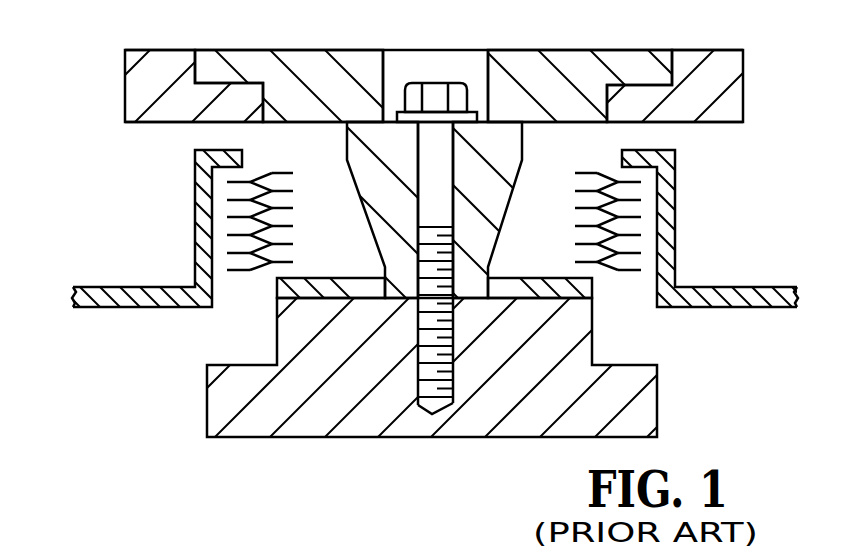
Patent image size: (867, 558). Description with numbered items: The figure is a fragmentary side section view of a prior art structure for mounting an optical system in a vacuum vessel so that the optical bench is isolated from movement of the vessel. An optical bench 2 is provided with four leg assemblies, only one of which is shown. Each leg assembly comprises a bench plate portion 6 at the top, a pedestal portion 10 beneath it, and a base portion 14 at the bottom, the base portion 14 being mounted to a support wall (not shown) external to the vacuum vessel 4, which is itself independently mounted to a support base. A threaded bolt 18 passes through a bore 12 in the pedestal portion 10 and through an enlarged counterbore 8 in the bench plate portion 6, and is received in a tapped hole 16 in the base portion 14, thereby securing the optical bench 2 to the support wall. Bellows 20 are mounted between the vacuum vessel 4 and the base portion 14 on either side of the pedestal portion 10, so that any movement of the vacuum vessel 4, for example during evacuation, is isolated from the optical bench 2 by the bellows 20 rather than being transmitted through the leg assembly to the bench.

The optical bench 2 is at (124, 83).
The vacuum vessel 4 is at (139, 287).
The bench plate portion 6 is at (262, 51).
The enlarged counterbore 8 is at (385, 74).
The pedestal portion 10 is at (374, 238).
The bore 12 is at (457, 211).
The base portion 14 is at (657, 403).
The tapped hole 16 is at (424, 408).
The threaded bolt 18 is at (441, 83).
The bellows 20 is at (292, 193).